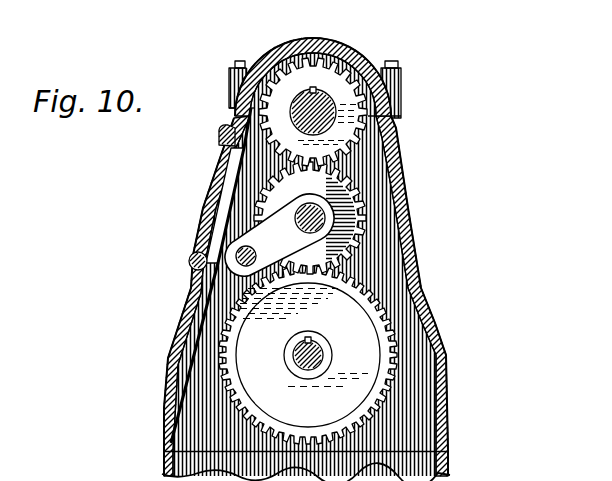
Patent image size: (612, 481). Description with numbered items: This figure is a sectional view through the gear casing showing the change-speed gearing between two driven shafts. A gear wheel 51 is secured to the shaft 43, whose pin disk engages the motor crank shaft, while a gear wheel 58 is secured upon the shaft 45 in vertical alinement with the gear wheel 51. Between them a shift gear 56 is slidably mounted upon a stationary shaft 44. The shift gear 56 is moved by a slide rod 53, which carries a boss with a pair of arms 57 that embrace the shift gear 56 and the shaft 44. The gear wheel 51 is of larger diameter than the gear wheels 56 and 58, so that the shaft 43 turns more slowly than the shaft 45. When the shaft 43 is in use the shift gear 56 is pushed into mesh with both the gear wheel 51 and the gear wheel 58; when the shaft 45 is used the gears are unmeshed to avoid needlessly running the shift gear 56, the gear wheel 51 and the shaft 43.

The shaft 43 is at (312, 352).
The stationary shaft 44 is at (246, 239).
The shaft 45 is at (310, 90).
The gear wheel 51 is at (361, 398).
The slide rod 53 is at (228, 252).
The shift gear 56 is at (352, 228).
The arms 57 is at (240, 232).
The gear wheel 58 is at (330, 70).